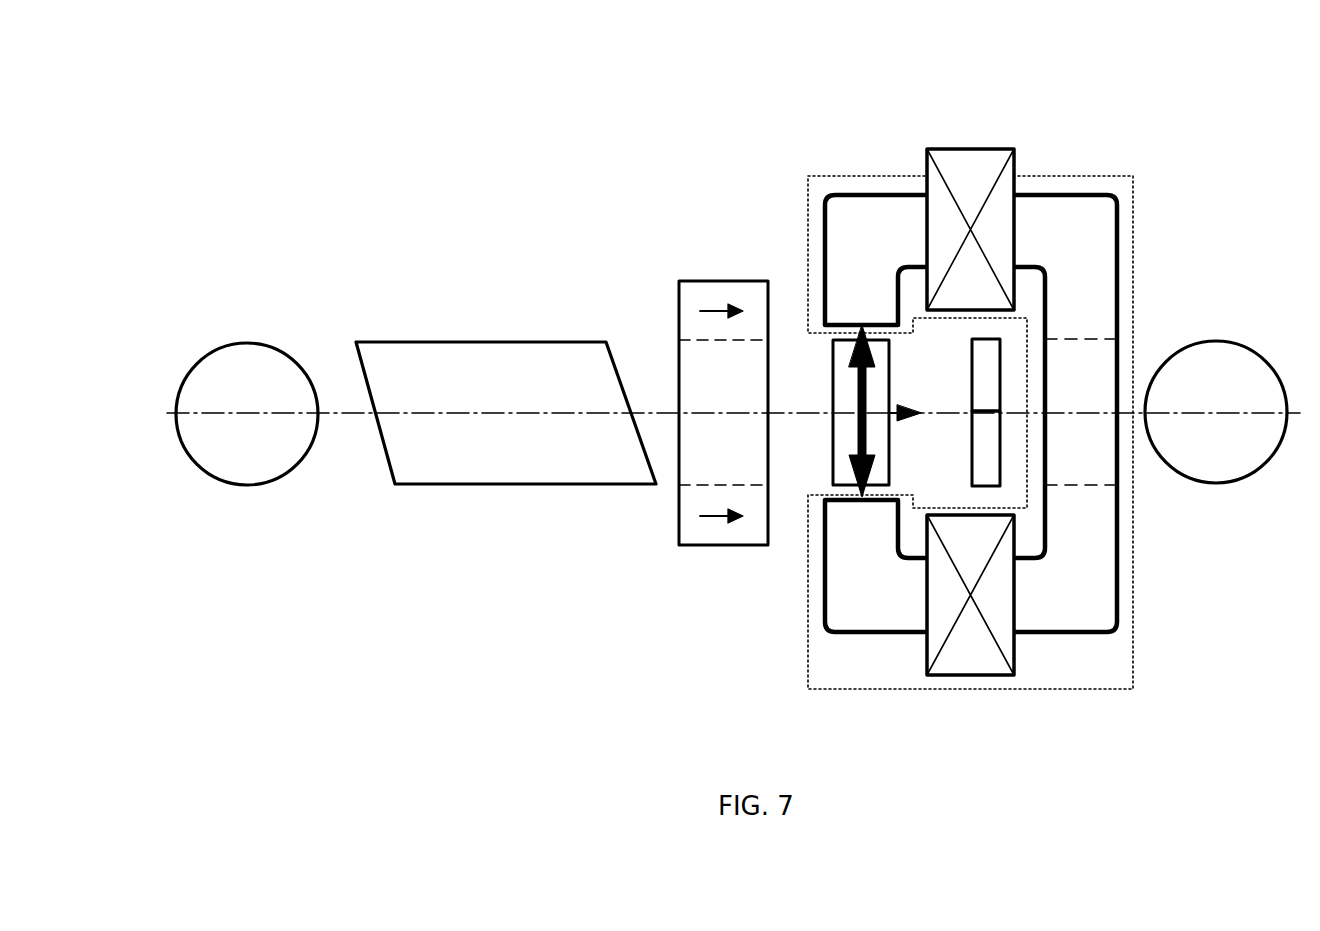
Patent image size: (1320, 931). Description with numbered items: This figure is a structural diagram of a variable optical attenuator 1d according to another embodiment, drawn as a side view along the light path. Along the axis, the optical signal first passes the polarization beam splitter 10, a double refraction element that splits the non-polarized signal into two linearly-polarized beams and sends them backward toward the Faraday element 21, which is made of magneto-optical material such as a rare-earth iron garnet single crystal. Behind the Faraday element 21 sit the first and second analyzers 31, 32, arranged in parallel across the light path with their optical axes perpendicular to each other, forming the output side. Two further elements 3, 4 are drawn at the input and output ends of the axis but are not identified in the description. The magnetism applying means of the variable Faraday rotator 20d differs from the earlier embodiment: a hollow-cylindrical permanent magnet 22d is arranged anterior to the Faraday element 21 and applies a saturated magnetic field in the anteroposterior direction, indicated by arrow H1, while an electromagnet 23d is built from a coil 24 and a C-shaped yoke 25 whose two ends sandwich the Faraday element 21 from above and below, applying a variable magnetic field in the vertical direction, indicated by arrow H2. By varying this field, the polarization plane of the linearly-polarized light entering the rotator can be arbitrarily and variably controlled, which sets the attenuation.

The torque detection device 1d is at (487, 190).
The first shaft 3 is at (260, 475).
The second shaft 4 is at (1232, 478).
The polarization beam splitter 10 is at (530, 485).
The sensor unit 20d is at (820, 32).
The Faraday element 21 is at (833, 402).
The permanent magnet 22d is at (722, 281).
The electromagnet 23d is at (845, 176).
The coil 24 is at (973, 158).
The yoke 25 is at (1090, 628).
The first analyzer 31 is at (1000, 380).
The second analyzer 32 is at (997, 450).
The saturated magnetic field arrow H1 is at (907, 413).
The variable magnetic field arrow H2 is at (855, 463).